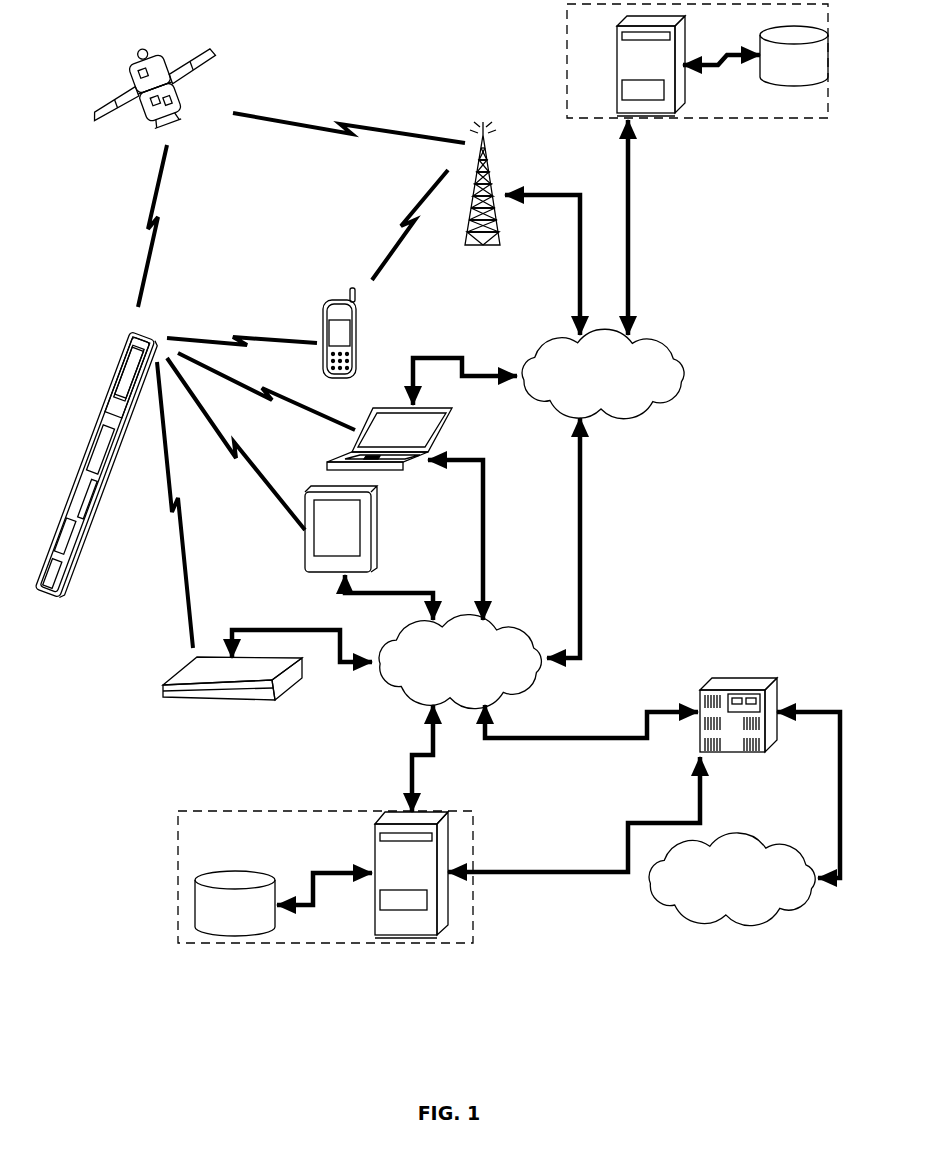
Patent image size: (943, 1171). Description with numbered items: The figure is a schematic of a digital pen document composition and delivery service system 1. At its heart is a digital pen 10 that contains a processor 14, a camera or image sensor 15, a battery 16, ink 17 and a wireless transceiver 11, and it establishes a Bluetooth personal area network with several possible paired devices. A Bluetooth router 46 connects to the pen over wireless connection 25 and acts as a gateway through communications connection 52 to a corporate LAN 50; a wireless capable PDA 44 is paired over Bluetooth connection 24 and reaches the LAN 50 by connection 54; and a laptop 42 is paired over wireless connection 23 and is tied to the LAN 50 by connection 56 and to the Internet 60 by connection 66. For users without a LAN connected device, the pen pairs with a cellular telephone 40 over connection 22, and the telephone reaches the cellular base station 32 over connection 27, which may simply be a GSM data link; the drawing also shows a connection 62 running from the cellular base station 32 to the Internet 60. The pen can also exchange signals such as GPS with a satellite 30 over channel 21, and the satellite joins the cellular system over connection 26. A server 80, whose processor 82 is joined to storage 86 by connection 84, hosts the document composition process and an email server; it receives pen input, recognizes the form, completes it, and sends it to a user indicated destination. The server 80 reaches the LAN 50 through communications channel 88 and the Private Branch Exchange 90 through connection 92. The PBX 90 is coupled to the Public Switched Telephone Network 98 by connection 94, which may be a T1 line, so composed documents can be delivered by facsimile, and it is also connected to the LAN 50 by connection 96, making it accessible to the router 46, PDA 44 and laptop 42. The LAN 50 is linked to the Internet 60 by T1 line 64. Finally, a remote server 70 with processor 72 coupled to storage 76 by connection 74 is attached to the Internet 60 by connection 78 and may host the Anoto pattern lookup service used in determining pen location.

The digital pen document composition and delivery service system 1 is at (147, 992).
The digital pen 10 is at (97, 449).
The wireless transceiver 11 is at (115, 380).
The processor 14 is at (88, 503).
The camera or image sensor 15 is at (70, 575).
The battery 16 is at (90, 445).
The ink 17 is at (62, 537).
The channel 21 is at (168, 226).
The connection 22 is at (242, 326).
The wireless connection 23 is at (266, 395).
The Bluetooth connection 24 is at (236, 444).
The wireless connection 25 is at (183, 505).
The connection 26 is at (349, 123).
The connection 27 is at (410, 225).
The satellite 30 is at (118, 70).
The cellular base station 32 is at (503, 183).
The cellular telephone 40 is at (357, 333).
The laptop 42 is at (403, 439).
The wireless capable PDA 44 is at (357, 529).
The Bluetooth router 46 is at (155, 697).
The LAN 50 is at (460, 662).
The communications connection 52 is at (302, 634).
The connection 54 is at (389, 597).
The connection 56 is at (473, 540).
The Internet 60 is at (604, 380).
The tower to Internet connection 62 is at (542, 265).
The T1 line 64 is at (580, 538).
The connection 66 is at (465, 371).
The server 70 is at (677, 61).
The processor 72 is at (635, 66).
The connection 74 is at (721, 74).
The storage 76 is at (794, 71).
The connection 78 is at (648, 227).
The server 80 is at (307, 877).
The processor 82 is at (396, 875).
The connection 84 is at (324, 894).
The storage 86 is at (235, 893).
The communications channel 88 is at (400, 758).
The Private Branch Exchange 90 is at (738, 713).
The connection 92 is at (574, 814).
The connection 94 is at (808, 795).
The connection 96 is at (591, 722).
The Public Switched Telephone Network 98 is at (645, 870).